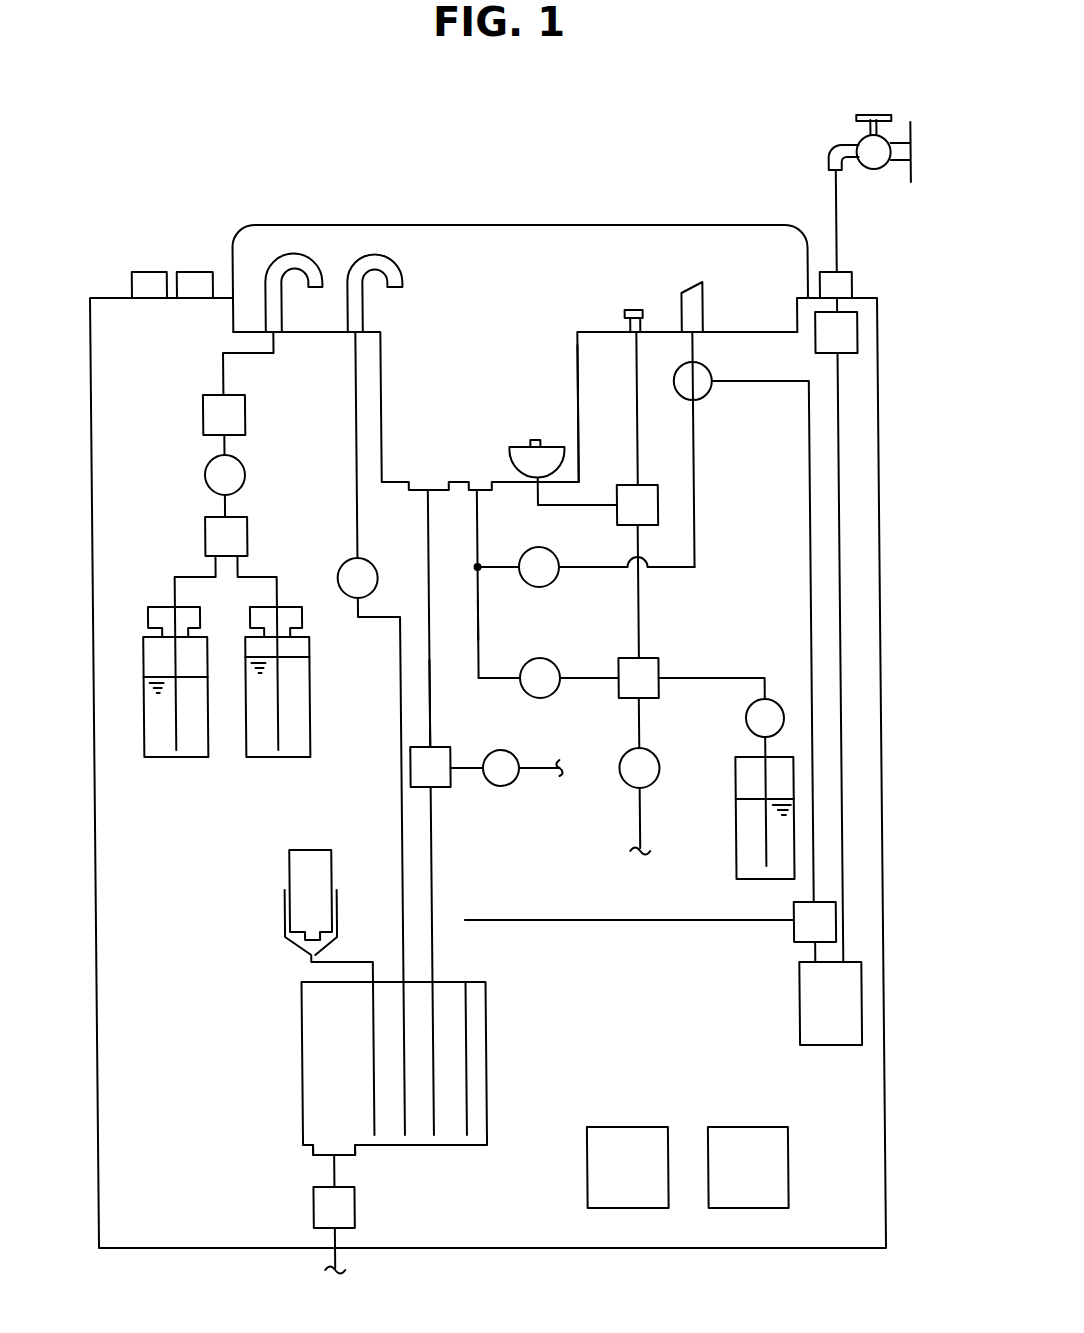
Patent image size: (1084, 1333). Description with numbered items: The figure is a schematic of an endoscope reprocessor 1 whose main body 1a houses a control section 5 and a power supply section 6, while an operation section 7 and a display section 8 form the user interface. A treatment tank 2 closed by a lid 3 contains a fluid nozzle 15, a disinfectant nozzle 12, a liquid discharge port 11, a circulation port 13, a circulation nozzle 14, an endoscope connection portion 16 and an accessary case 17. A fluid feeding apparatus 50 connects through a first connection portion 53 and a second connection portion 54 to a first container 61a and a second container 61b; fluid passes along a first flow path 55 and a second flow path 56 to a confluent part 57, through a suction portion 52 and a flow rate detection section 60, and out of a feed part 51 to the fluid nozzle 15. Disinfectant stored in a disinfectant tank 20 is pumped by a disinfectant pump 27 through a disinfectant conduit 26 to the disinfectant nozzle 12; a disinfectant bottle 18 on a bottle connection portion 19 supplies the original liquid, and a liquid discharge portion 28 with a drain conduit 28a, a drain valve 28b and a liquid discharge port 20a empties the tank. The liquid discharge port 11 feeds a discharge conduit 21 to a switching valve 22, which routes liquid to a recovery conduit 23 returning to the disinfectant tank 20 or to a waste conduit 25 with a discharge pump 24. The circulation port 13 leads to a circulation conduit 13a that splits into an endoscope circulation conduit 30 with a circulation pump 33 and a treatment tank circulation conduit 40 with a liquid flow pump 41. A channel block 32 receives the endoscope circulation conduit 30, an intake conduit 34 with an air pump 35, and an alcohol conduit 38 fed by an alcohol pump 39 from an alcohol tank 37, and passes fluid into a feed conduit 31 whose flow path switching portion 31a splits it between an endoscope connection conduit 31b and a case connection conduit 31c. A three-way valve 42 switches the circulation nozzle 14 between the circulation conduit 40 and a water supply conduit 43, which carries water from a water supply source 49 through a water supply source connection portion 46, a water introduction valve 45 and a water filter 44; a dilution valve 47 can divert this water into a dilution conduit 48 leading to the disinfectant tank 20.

The endoscope reprocessor 1 is at (165, 154).
The main body 1a is at (92, 295).
The treatment tank 2 is at (576, 347).
The lid 3 is at (451, 225).
The control section 5 is at (706, 1127).
The power supply section 6 is at (590, 1127).
The operation section 7 is at (192, 272).
The display section 8 is at (149, 272).
The liquid discharge port 11 is at (430, 488).
The disinfectant nozzle 12 is at (368, 253).
The circulation port 13 is at (477, 488).
The circulation conduit 13a is at (475, 504).
The circulation nozzle 14 is at (687, 290).
The fluid nozzle 15 is at (276, 253).
The endoscope connection portion 16 is at (632, 308).
The accessary case 17 is at (546, 442).
The disinfectant bottle 18 is at (326, 870).
The bottle connection portion 19 is at (331, 937).
The disinfectant tank 20 is at (478, 982).
The liquid discharge port 20a is at (324, 1152).
The discharge conduit 21 is at (426, 696).
The switching valve 22 is at (446, 747).
The recovery conduit 23 is at (428, 847).
The discharge pump 24 is at (485, 782).
The waste conduit 25 is at (530, 763).
The disinfectant conduit 26 is at (397, 696).
The disinfectant pump 27 is at (369, 564).
The liquid discharge portion 28 is at (413, 1214).
The drain conduit 28a is at (328, 1172).
The drain valve 28b is at (346, 1208).
The endoscope circulation conduit 30 is at (478, 612).
The feed conduit 31 is at (636, 612).
The flow path switching portion 31a is at (615, 524).
The endoscope connection conduit 31b is at (636, 464).
The case connection conduit 31c is at (591, 503).
The channel block 32 is at (615, 696).
The circulation pump 33 is at (548, 698).
The intake conduit 34 is at (636, 736).
The air pump 35 is at (652, 788).
The alcohol tank 37 is at (787, 757).
The alcohol conduit 38 is at (668, 676).
The alcohol pump 39 is at (772, 704).
The treatment tank circulation conduit 40 is at (491, 564).
The liquid flow pump 41 is at (545, 585).
The three-way valve 42 is at (676, 373).
The water supply conduit 43 is at (719, 379).
The water filter 44 is at (855, 1000).
The water introduction valve 45 is at (875, 328).
The water supply source connection portion 46 is at (852, 272).
The dilution valve 47 is at (788, 932).
The dilution conduit 48 is at (697, 919).
The water supply source 49 is at (828, 147).
The fluid feeding apparatus 50 is at (221, 575).
The feed part 51 is at (221, 354).
The suction portion 52 is at (207, 468).
The first connection portion 53 is at (150, 607).
The second connection portion 54 is at (286, 607).
The first flow path 55 is at (188, 577).
The second flow path 56 is at (260, 577).
The confluent part 57 is at (203, 523).
The flow rate detection section 60 is at (202, 399).
The first container 61a is at (172, 760).
The second container 61b is at (274, 760).